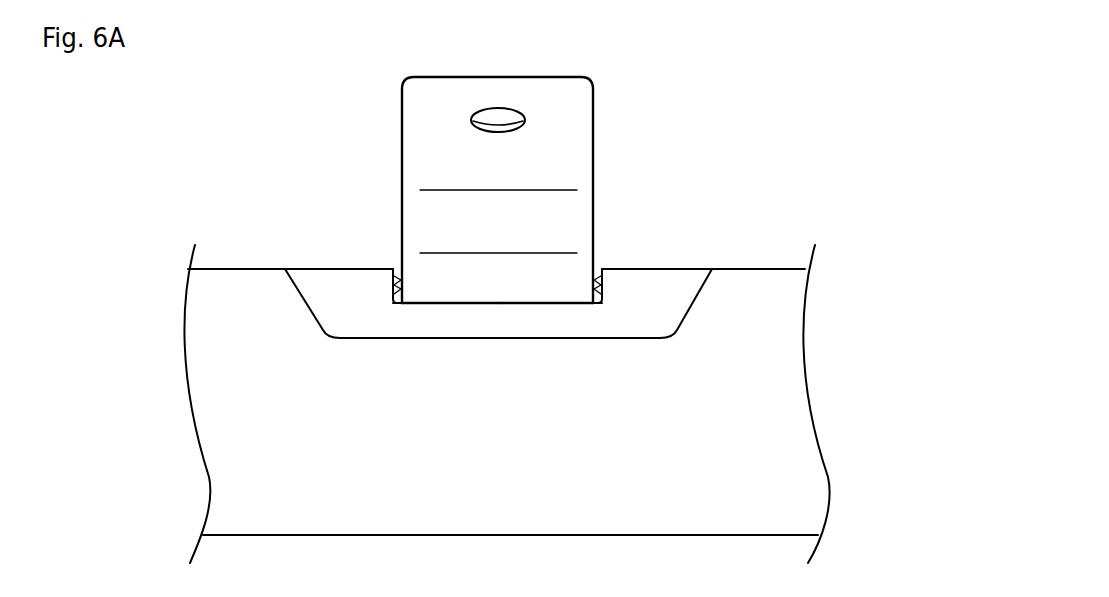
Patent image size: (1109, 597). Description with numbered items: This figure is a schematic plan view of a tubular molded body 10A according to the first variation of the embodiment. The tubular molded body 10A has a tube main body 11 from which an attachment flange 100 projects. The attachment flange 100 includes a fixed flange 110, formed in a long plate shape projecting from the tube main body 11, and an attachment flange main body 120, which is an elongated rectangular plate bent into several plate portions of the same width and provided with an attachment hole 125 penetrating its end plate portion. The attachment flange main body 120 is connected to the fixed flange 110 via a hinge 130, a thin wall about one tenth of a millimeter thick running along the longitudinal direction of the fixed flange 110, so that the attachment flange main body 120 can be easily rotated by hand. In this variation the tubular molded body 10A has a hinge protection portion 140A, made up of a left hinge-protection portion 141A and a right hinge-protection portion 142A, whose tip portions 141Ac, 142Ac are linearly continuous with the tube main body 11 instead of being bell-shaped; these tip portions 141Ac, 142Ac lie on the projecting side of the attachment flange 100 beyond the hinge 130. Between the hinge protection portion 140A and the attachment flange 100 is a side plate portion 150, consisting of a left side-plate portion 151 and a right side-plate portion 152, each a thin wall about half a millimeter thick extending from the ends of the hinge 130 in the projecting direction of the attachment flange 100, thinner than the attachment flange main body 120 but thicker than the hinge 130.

The tubular molded body 10A is at (811, 160).
The tube main body 11 is at (238, 300).
The attachment flange 100 is at (383, 125).
The fixed flange 110 is at (460, 323).
The attachment flange main body 120 is at (560, 145).
The attachment hole 125 is at (499, 110).
The hinge 130 is at (517, 302).
The hinge protection portion 140A is at (499, 171).
The left hinge-protection portion 141A is at (362, 287).
The tip portion 141Ac is at (325, 267).
The right hinge-protection portion 142A is at (633, 285).
The tip portion 142Ac is at (676, 269).
The side plate portion 150 is at (498, 199).
The left side-plate portion 151 is at (398, 280).
The right side-plate portion 152 is at (602, 285).